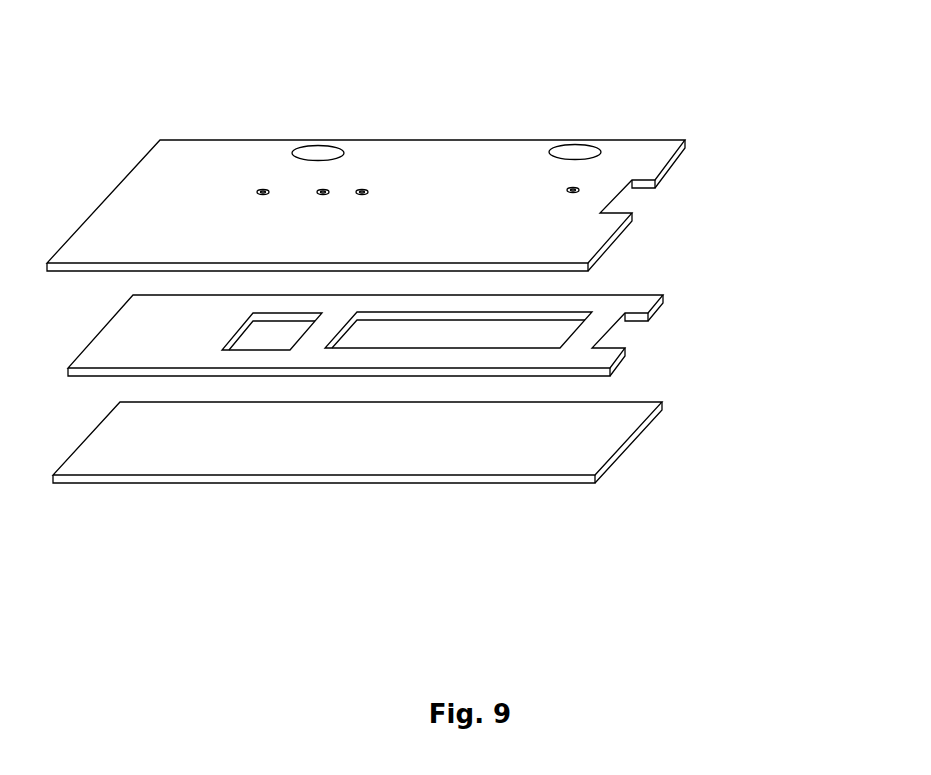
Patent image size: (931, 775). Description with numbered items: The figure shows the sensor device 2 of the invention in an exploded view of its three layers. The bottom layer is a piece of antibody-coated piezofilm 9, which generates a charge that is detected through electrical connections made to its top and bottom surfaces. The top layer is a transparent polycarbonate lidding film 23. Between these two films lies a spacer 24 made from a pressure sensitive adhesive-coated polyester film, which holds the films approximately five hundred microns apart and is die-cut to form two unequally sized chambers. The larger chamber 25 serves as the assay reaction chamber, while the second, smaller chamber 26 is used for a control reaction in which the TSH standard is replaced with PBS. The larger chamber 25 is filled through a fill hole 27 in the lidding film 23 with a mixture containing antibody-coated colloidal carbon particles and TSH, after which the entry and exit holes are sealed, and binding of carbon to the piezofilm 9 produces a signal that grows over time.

The sensor assembly 2 is at (777, 150).
The antibody-coated piezofilm 9 is at (622, 407).
The transparent polycarbonate lidding film 23 is at (645, 158).
The spacer 24 is at (645, 301).
The chamber 25 is at (433, 335).
The second smaller chamber 26 is at (258, 337).
The fill hole 27 is at (266, 189).